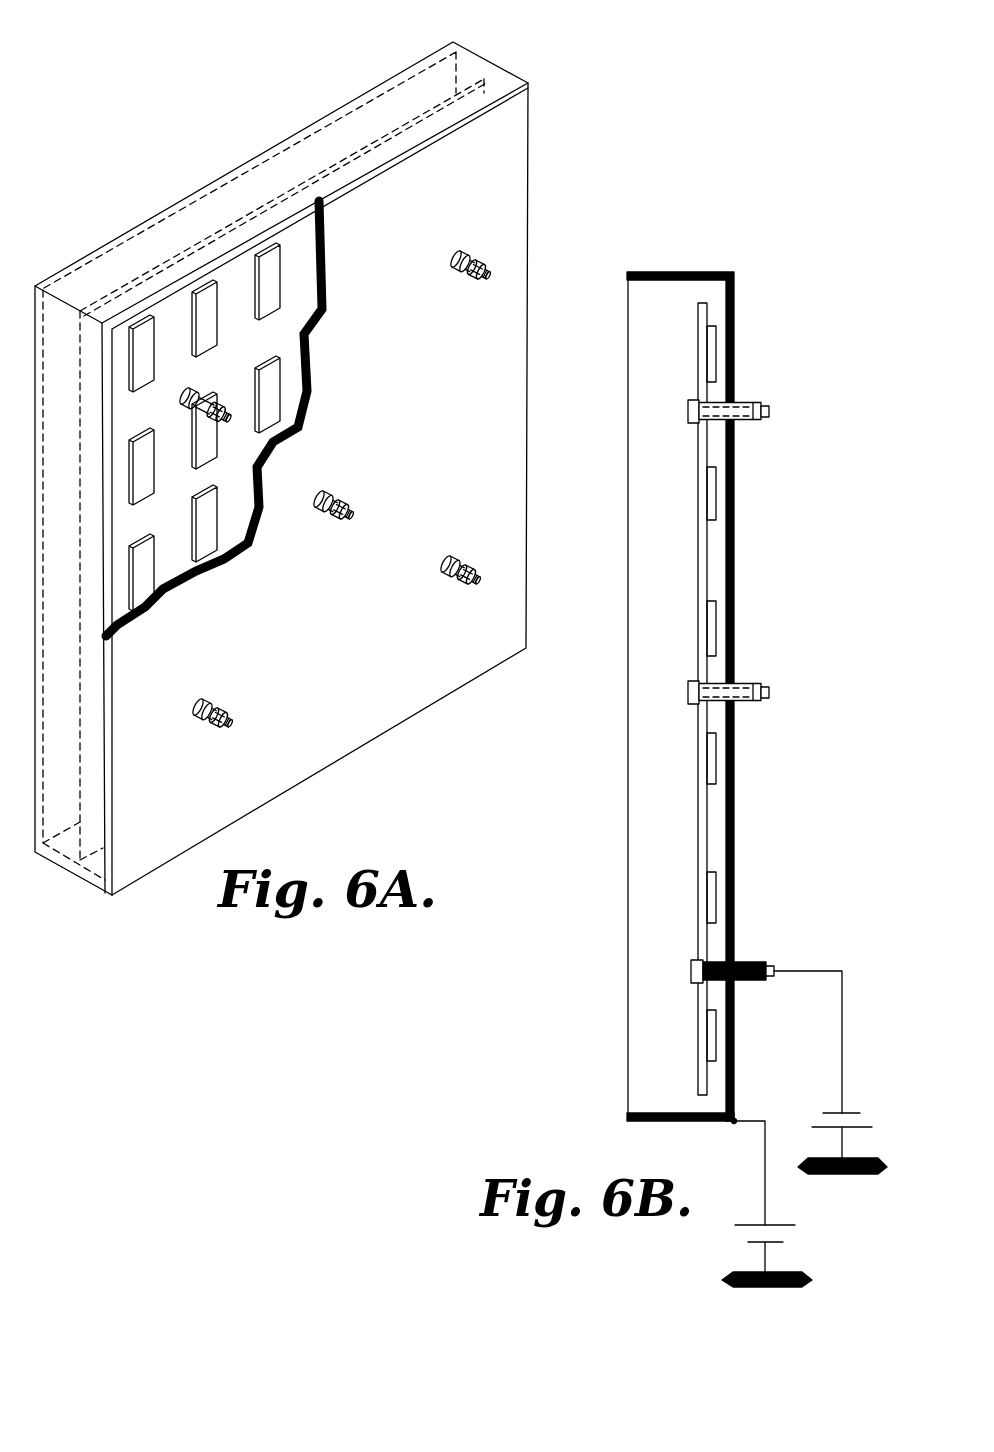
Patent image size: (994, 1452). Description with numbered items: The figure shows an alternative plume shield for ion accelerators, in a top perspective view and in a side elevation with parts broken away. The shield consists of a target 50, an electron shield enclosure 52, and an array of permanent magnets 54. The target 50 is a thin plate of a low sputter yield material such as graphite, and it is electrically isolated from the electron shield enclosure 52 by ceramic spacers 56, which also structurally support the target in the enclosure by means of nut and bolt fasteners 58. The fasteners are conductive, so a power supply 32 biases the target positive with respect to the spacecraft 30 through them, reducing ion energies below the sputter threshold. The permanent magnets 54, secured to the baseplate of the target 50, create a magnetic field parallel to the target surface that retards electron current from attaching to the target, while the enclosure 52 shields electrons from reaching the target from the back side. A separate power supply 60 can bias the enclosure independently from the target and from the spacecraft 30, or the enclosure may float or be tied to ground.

In FIG. 6B, the spacecraft 30 is at (847, 1170).
In FIG. 6B, the power supply 32 is at (815, 1121).
In FIG. 6A, the target 50 is at (265, 200).
In FIG. 6B, the target 50 is at (703, 809).
In FIG. 6A, the electron shield enclosure 52 is at (466, 76).
In FIG. 6B, the electron shield enclosure 52 is at (665, 275).
In FIG. 6A, the array of permanent magnets 54 is at (273, 400).
In FIG. 6B, the array of permanent magnets 54 is at (714, 486).
In FIG. 6B, the ceramic spacers 56 is at (714, 357).
In FIG. 6B, the nut and bolt fasteners 58 is at (776, 971).
In FIG. 6B, the separate power supply 60 is at (738, 1235).